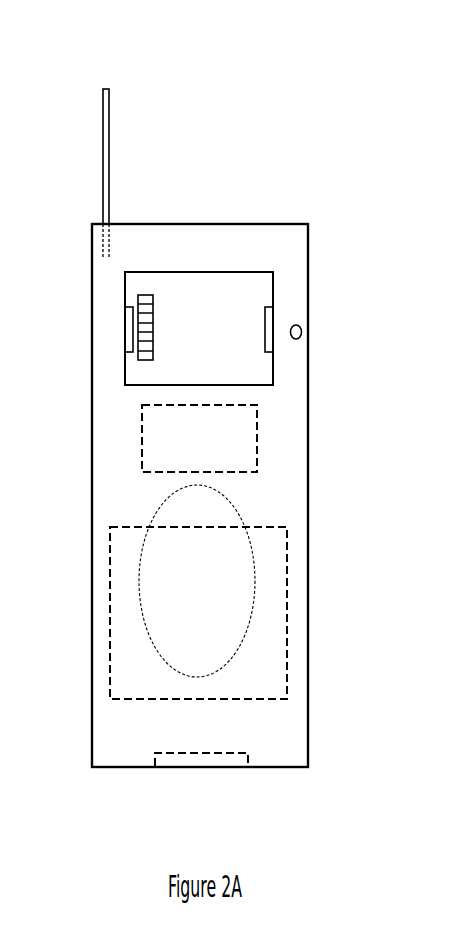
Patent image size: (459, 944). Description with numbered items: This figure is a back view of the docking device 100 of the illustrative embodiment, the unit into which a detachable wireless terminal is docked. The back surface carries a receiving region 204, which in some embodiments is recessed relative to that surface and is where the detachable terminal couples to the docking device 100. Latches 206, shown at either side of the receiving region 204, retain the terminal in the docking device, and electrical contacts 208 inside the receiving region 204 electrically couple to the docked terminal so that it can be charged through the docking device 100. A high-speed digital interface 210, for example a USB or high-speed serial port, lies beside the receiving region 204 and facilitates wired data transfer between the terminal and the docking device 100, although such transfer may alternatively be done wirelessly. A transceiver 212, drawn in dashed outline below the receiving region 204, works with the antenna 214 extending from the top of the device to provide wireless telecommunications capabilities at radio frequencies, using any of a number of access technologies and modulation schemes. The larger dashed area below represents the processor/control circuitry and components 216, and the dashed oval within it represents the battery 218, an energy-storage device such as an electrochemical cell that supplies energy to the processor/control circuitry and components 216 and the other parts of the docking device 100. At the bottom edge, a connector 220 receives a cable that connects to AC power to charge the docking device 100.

The docking device 100 is at (284, 60).
The receiving region 204 is at (220, 300).
The latches 206 is at (121, 330).
The electrical contacts 208 is at (155, 293).
The high-speed digital interface 210 is at (295, 317).
The transceiver 212 is at (258, 445).
The antenna 214 is at (116, 134).
The processor/control circuitry and components 216 is at (270, 598).
The battery 218 is at (200, 508).
The connector 220 is at (233, 760).